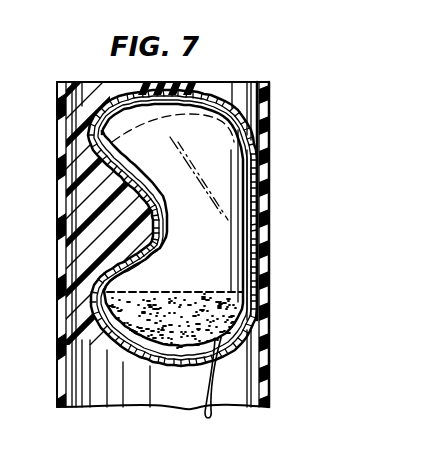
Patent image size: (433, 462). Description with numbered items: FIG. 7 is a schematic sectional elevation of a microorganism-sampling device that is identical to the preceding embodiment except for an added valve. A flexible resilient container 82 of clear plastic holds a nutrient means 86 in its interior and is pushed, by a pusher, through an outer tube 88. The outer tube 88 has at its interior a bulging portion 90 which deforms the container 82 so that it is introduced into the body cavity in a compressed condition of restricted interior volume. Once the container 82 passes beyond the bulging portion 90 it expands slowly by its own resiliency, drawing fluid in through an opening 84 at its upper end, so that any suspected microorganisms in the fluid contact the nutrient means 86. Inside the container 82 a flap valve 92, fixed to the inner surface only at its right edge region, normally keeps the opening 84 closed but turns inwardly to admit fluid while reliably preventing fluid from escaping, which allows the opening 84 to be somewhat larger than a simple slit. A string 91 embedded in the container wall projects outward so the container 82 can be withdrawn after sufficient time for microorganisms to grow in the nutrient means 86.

The flexible resilient container 82 is at (262, 162).
The opening 84 is at (128, 83).
The nutrient means 86 is at (187, 291).
The outer tube 88 is at (264, 268).
The bulging portion 90 is at (102, 225).
The string 91 is at (212, 388).
The flap valve 92 is at (168, 120).